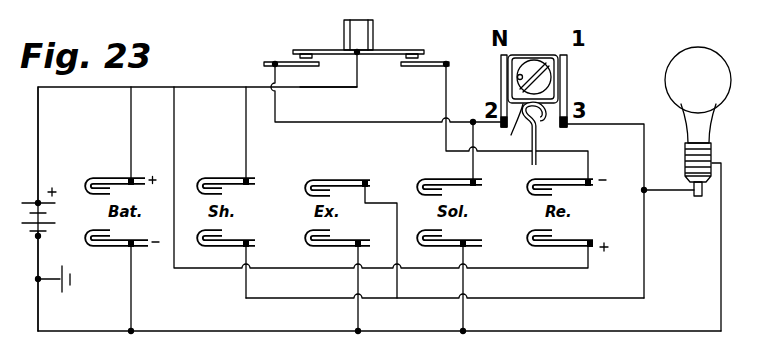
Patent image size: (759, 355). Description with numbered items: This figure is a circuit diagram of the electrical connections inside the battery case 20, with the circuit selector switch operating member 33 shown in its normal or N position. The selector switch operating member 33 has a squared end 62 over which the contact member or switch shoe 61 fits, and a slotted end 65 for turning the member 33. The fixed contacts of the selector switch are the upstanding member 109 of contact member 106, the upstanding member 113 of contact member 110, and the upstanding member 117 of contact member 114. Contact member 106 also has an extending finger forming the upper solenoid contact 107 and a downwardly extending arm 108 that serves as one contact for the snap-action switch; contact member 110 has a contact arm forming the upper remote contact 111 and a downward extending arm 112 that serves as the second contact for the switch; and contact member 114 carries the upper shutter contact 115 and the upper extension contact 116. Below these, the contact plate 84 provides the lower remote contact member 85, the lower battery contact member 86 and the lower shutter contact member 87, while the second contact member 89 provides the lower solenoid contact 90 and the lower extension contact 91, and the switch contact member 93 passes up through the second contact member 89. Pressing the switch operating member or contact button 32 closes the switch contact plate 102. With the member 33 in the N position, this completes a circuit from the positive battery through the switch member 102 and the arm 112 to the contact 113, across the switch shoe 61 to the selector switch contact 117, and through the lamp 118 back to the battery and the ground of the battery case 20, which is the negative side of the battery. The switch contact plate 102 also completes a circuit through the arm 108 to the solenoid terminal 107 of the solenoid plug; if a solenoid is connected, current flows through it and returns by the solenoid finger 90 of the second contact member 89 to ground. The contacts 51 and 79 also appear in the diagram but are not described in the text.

The contact plate 84 is at (50, 120).
The second contact member 89 is at (186, 330).
The battery case 20 is at (56, 287).
The lower battery contact member 86 is at (88, 186).
The battery negative terminal 51 is at (82, 245).
The lower shutter contact member 87 is at (203, 190).
The upper shutter contact 115 is at (195, 248).
The upper extension contact 116 is at (307, 190).
The lower extension contact 91 is at (300, 248).
The upper solenoid contact 107 is at (424, 188).
The lower solenoid contact 90 is at (421, 248).
The upper remote contact 111 is at (531, 187).
The lower remote contact member 85 is at (528, 248).
The contact member 110 is at (590, 165).
The contact member 106 is at (365, 125).
The switch contact member 93 is at (359, 86).
The contact member 114 is at (646, 253).
The switch operating member 32 is at (354, 31).
The switch contact plate 102 is at (388, 52).
The downwardly extending arm 108 is at (282, 66).
The downward extending arm 112 is at (404, 66).
The upstanding member 109 is at (500, 77).
The upstanding member 117 is at (568, 72).
The squared end 62 is at (560, 52).
The slotted end 65 is at (530, 65).
The selector switch operating member 33 is at (546, 84).
The contact member 61 is at (509, 126).
The upstanding member 113 is at (541, 120).
The lamp 118 is at (682, 66).
The lamp base contact 79 is at (693, 197).